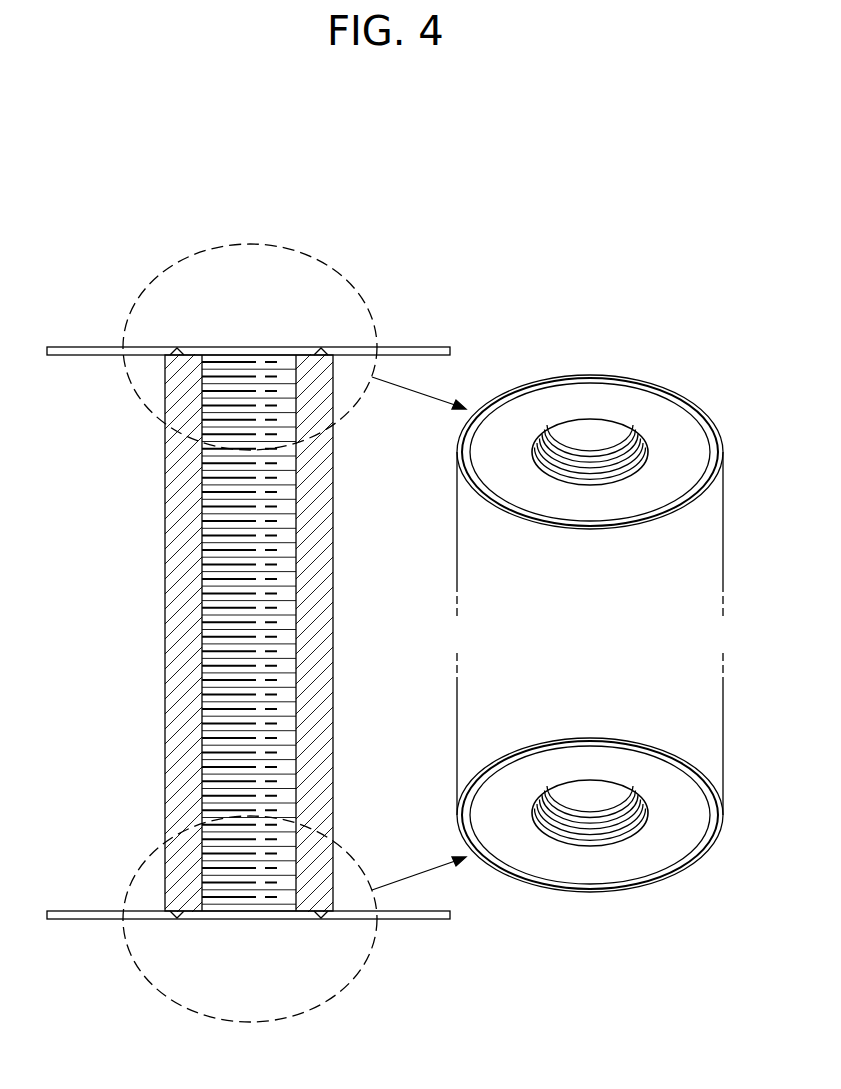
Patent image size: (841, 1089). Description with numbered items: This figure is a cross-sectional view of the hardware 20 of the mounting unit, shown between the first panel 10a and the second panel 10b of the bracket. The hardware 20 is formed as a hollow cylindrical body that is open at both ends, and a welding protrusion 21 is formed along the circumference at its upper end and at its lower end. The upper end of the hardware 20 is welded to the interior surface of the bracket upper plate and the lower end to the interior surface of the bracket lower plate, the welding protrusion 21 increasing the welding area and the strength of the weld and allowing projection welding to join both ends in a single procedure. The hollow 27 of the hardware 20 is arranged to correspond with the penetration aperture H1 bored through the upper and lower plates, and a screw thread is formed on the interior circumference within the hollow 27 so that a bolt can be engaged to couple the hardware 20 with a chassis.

The first panel 10a is at (73, 347).
The second panel 10b is at (73, 919).
The hardware 20 is at (165, 578).
The welding protrusion 21 is at (168, 347).
The hollow 27 is at (203, 413).
The penetration aperture H1 is at (282, 352).